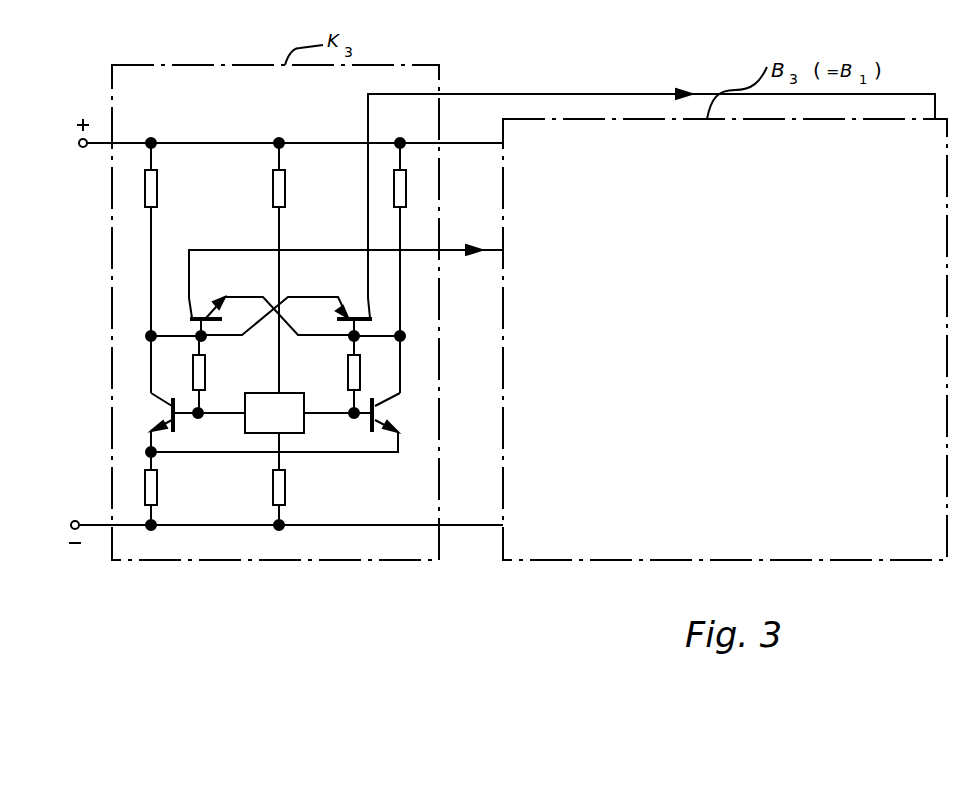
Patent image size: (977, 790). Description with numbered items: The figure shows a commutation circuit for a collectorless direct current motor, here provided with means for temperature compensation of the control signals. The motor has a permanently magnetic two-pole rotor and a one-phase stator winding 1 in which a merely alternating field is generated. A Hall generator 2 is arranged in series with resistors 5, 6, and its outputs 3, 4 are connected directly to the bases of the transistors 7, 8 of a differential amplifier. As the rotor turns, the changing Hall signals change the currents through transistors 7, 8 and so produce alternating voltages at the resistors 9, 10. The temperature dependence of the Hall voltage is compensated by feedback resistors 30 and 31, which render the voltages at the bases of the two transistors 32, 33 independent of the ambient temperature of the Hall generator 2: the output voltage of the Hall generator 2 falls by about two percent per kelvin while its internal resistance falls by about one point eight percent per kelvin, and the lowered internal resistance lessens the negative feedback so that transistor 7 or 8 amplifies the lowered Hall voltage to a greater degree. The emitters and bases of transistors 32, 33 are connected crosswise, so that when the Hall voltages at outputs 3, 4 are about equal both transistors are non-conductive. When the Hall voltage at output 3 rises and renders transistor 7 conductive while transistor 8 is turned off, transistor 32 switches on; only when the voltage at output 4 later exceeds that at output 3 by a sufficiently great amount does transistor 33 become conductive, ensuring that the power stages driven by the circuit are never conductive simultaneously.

The stator winding 1 is at (157, 487).
The Hall generator 2 is at (260, 393).
The Hall generator output 3 is at (228, 415).
The Hall generator output 4 is at (321, 415).
The resistor 5 is at (285, 188).
The resistor 6 is at (284, 487).
The difference-amplifier transistor 7 is at (166, 412).
The difference-amplifier transistor 8 is at (381, 412).
The resistor 9 is at (157, 188).
The resistor 10 is at (413, 188).
The feedback resistor 30 is at (187, 374).
The feedback resistor 31 is at (367, 374).
The transistor 32 is at (258, 316).
The transistor 33 is at (296, 316).